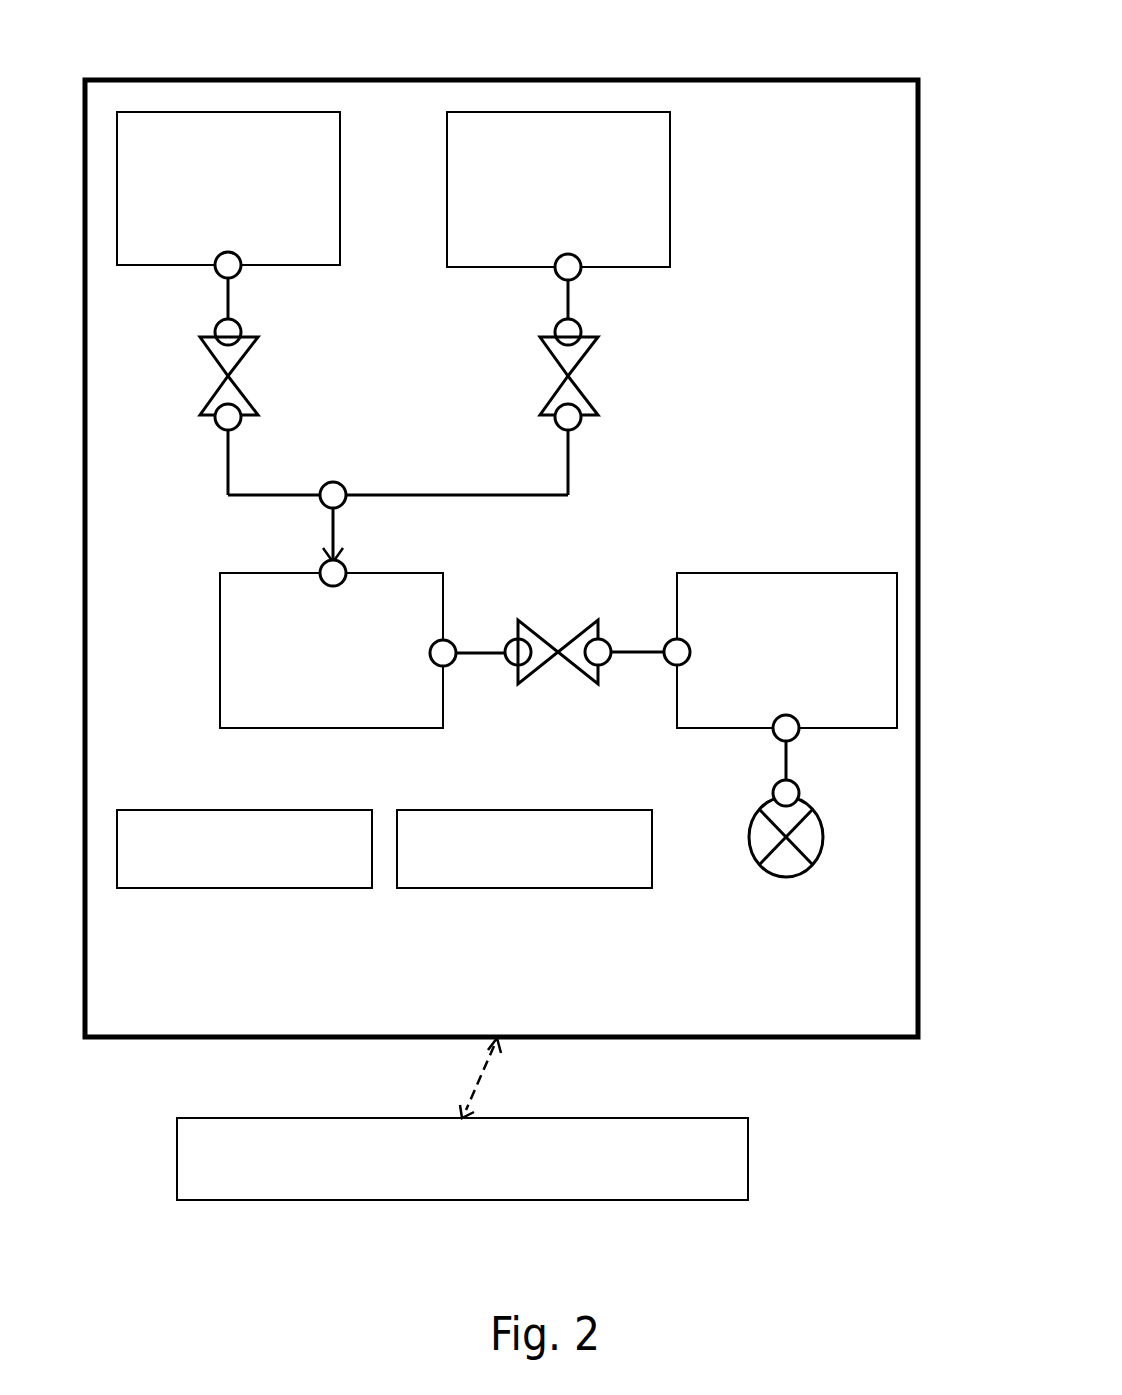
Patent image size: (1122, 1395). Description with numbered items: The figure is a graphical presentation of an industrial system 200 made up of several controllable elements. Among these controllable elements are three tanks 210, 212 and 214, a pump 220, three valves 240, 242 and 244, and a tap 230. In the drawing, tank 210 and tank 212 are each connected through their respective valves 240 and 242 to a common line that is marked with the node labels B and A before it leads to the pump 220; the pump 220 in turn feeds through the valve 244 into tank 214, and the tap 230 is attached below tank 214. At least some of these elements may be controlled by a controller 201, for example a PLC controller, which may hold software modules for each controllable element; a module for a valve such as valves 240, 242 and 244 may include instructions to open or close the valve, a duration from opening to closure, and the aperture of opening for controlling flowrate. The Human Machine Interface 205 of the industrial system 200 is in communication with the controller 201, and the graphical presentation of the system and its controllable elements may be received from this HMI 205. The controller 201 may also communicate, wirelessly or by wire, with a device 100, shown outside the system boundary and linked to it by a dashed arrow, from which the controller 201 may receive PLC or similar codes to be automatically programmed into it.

The industrial system 200 is at (627, 44).
The tank 210 is at (228, 195).
The tank 212 is at (558, 196).
The tank 214 is at (780, 657).
The pump 220 is at (338, 644).
The tap 230 is at (813, 865).
The valve 240 is at (213, 383).
The valve 242 is at (573, 375).
The valve 244 is at (532, 675).
The controller 201 is at (215, 888).
The Human Machine Interface 205 is at (497, 888).
The device 100 is at (275, 1200).
The node A is at (572, 433).
The node B is at (340, 486).